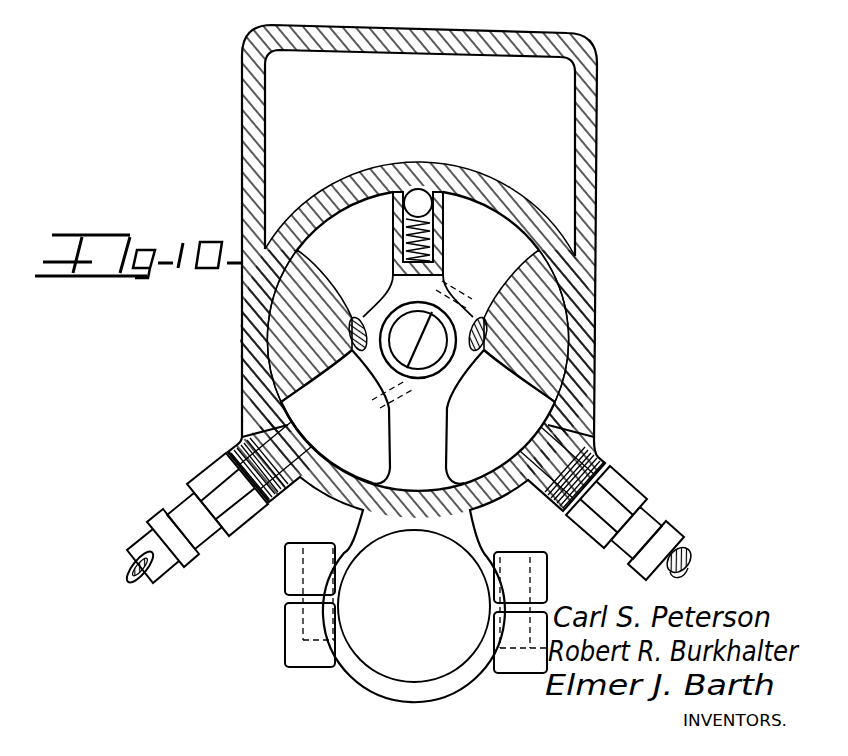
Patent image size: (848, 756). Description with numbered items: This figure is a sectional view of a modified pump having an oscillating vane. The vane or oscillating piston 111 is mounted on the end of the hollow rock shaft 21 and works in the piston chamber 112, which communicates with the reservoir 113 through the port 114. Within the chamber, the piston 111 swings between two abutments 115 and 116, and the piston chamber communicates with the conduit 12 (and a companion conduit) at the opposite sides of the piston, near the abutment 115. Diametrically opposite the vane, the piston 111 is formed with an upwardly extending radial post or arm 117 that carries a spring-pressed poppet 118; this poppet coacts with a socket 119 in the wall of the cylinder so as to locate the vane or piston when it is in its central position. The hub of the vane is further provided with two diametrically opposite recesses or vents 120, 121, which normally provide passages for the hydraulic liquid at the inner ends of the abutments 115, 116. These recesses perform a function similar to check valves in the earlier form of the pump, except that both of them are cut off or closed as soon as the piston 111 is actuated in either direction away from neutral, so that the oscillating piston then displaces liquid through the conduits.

The conduit 12 is at (131, 569).
The hollow rock shaft 21 is at (443, 308).
The vane or oscillating piston 111 is at (428, 433).
The piston chamber 112 is at (362, 447).
The reservoir 113 is at (456, 86).
The port 114 is at (313, 213).
The abutment 115 is at (290, 368).
The abutment 116 is at (530, 370).
The radial post or arm 117 is at (400, 233).
The spring-pressed poppet 118 is at (410, 190).
The socket 119 is at (420, 192).
The recess or vent 120 is at (364, 317).
The recess or vent 121 is at (474, 317).